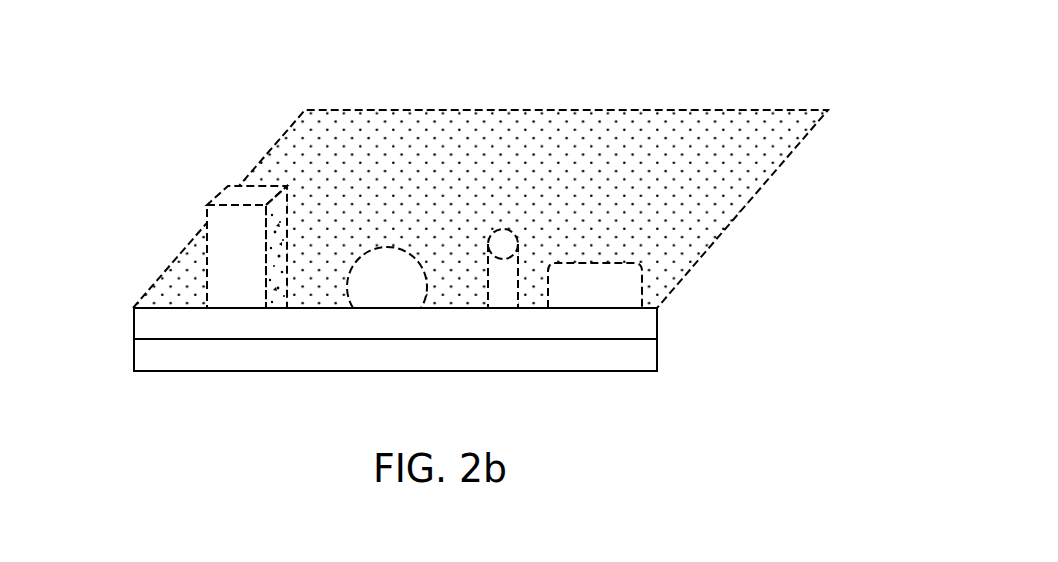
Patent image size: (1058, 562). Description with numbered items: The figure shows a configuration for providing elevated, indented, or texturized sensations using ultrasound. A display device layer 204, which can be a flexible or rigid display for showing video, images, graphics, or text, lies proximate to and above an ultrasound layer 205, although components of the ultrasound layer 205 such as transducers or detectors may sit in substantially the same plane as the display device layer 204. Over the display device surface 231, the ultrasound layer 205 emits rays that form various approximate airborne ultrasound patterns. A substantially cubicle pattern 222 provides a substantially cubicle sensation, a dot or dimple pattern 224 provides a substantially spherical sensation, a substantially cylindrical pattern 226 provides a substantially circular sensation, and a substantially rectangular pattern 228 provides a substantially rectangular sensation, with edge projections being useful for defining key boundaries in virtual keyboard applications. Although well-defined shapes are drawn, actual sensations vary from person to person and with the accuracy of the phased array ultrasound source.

The display device layer 204 is at (133, 322).
The ultrasound layer 205 is at (657, 352).
The substantially cubicle pattern 222 is at (275, 185).
The dot or dimple pattern 224 is at (380, 247).
The substantially cylindrical pattern 226 is at (503, 230).
The substantially rectangular pattern 228 is at (593, 263).
The display device surface 231 is at (533, 128).